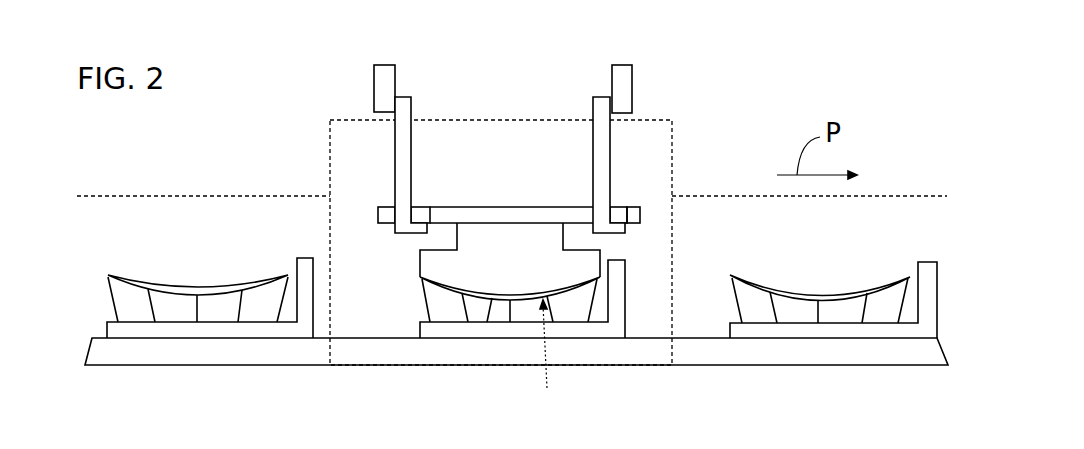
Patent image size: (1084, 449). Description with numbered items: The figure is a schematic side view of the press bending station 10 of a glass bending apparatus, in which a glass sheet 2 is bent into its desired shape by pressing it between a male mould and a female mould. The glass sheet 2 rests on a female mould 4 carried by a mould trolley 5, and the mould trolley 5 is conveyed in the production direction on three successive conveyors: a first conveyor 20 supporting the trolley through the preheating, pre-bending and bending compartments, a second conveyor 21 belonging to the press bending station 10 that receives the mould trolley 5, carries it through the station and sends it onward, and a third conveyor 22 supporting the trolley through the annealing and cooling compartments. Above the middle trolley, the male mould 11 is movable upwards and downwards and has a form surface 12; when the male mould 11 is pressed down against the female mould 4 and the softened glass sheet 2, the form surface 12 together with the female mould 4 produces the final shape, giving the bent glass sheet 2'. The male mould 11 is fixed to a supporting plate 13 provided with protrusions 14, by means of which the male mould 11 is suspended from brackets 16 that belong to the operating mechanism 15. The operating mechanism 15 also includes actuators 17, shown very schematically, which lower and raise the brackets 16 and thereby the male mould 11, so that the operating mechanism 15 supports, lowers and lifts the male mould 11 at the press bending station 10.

The glass sheet 2 is at (198, 259).
The bent glass sheet 2' is at (665, 323).
The female mould 4 is at (122, 298).
The mould trolley 5 is at (150, 328).
The press bending station 10 is at (392, 38).
The male mould 11 is at (521, 274).
The form surface 12 is at (546, 359).
The supporting plate 13 is at (485, 217).
The protrusions 14 is at (418, 217).
The operating mechanism 15 is at (648, 50).
The brackets 16 is at (402, 147).
The actuators 17 is at (382, 88).
The first conveyor 20 is at (278, 352).
The second conveyor 21 is at (395, 352).
The third conveyor 22 is at (888, 357).